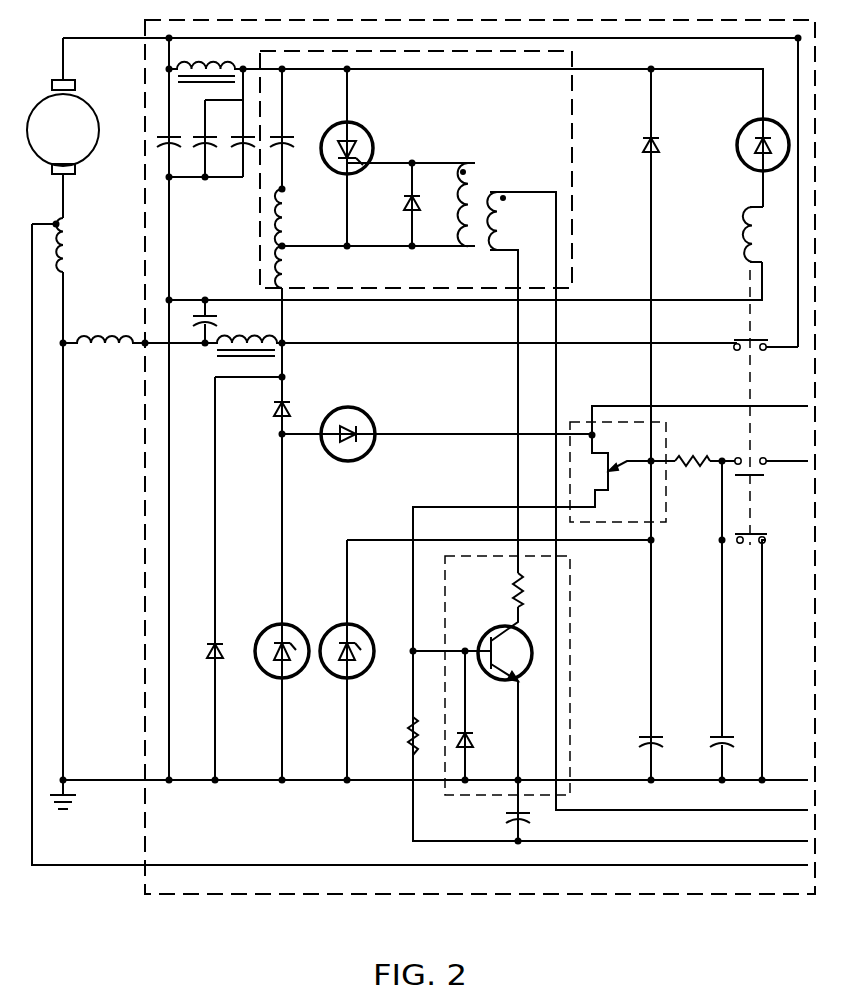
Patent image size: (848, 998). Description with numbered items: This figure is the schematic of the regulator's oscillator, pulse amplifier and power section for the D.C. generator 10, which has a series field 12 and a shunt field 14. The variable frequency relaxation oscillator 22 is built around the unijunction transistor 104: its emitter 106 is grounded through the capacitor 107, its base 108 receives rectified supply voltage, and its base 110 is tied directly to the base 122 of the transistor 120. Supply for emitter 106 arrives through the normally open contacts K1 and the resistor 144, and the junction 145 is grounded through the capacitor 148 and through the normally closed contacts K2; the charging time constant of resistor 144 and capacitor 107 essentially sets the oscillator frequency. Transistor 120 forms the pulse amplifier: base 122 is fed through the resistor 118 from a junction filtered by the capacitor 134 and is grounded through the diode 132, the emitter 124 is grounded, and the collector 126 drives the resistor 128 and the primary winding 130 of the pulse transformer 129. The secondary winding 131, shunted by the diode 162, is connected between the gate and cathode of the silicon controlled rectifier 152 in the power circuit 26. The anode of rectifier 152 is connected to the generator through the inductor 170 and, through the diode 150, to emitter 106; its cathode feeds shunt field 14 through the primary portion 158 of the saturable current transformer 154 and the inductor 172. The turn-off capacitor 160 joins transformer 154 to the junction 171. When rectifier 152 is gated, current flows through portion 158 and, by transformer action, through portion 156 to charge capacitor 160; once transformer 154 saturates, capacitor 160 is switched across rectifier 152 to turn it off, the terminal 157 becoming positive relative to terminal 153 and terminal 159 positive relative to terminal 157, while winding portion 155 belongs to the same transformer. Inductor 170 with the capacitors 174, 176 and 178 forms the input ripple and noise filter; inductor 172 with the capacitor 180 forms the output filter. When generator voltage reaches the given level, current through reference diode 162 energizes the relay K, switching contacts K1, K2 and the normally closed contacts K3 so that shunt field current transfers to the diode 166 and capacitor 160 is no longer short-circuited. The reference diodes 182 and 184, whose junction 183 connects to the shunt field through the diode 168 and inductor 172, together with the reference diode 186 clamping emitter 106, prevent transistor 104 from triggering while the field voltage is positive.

The D.C. generator 10 is at (96, 133).
The series field 12 is at (64, 230).
The shunt field 14 is at (100, 343).
The variable frequency relaxation oscillator 22 is at (583, 422).
The power circuit 26 is at (572, 78).
The unijunction transistor 104 is at (603, 481).
The emitter 106 is at (638, 471).
The capacitor 107 is at (648, 737).
The base electrode 108 is at (596, 436).
The base 110 is at (598, 500).
The resistor 118 is at (410, 720).
The transistor 120 is at (555, 699).
The base 122 is at (472, 650).
The emitter 124 is at (496, 678).
The collector 126 is at (505, 628).
The resistor 128 is at (515, 581).
The pulse transformer 129 is at (512, 180).
The primary winding 130 is at (499, 217).
The secondary winding 131 is at (465, 226).
The diode 132 is at (471, 738).
The filter capacitor 134 is at (505, 813).
The resistor 144 is at (702, 448).
The junction 145 is at (722, 458).
The capacitor 148 is at (720, 737).
The diode 150 is at (648, 143).
The silicon controlled rectifier 152 is at (370, 133).
The terminal 153 is at (285, 196).
The saturable current transformer 154 is at (318, 172).
The winding section 155 is at (283, 236).
The portion 156 is at (283, 215).
The terminal 157 is at (285, 258).
The primary winding portion 158 is at (290, 275).
The terminal 159 is at (283, 284).
The turn-off capacitor 160 is at (285, 138).
The reference diode 162 is at (415, 201).
The diode 166 is at (210, 648).
The diode 168 is at (273, 410).
The inductor 170 is at (198, 67).
The junction 171 is at (284, 70).
The inductor 172 is at (233, 343).
The capacitor 174 is at (212, 136).
The capacitor 176 is at (241, 145).
The capacitor 178 is at (178, 136).
The capacitor 180 is at (212, 318).
The reference diode 182 is at (366, 452).
The junction 183 is at (280, 434).
The reference diode 184 is at (264, 633).
The reference diode 186 is at (331, 633).
The relay K is at (756, 234).
The normally open contacts K1 is at (766, 459).
The normally closed contacts K2 is at (766, 545).
The normally closed contacts K3 is at (739, 335).